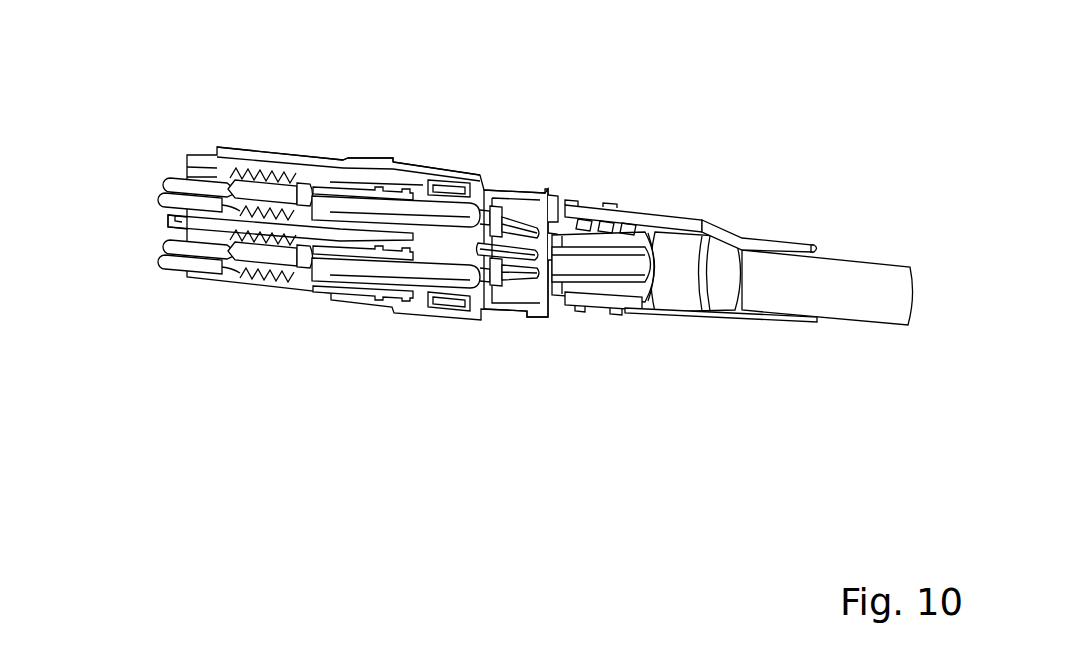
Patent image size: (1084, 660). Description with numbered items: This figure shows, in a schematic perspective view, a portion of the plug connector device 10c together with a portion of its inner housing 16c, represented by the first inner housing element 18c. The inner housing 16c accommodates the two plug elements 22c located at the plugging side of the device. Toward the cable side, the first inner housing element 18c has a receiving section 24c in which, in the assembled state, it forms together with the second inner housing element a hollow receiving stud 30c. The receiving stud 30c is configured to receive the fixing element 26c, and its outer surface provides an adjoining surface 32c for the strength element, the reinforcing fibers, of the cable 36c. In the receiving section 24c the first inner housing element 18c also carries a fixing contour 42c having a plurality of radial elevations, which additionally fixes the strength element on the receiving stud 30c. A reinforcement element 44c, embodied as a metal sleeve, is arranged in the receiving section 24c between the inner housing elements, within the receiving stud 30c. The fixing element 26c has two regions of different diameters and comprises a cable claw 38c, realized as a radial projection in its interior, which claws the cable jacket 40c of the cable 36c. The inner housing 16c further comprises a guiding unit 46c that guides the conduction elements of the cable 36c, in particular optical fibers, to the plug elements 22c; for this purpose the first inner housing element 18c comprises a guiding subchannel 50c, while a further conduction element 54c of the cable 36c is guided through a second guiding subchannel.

The plug connector device 10c is at (549, 157).
The inner housing 16c is at (332, 302).
The first inner housing element 18c is at (372, 165).
The plug elements 22c is at (187, 167).
The receiving section 24c is at (493, 343).
The fixing element 26c is at (680, 220).
The hollow receiving stud 30c is at (533, 328).
The adjoining surface 32c is at (613, 292).
The cable 36c is at (867, 295).
The cable claw 38c is at (810, 240).
The cable jacket 40c is at (777, 290).
The fixing contour 42c is at (587, 292).
The reinforcement element 44c is at (630, 267).
The guiding unit 46c is at (401, 270).
The guiding subchannel 50c is at (408, 210).
The further conduction element 54c is at (365, 265).